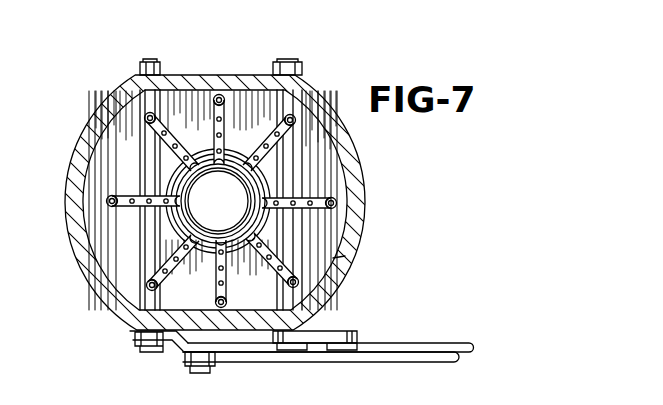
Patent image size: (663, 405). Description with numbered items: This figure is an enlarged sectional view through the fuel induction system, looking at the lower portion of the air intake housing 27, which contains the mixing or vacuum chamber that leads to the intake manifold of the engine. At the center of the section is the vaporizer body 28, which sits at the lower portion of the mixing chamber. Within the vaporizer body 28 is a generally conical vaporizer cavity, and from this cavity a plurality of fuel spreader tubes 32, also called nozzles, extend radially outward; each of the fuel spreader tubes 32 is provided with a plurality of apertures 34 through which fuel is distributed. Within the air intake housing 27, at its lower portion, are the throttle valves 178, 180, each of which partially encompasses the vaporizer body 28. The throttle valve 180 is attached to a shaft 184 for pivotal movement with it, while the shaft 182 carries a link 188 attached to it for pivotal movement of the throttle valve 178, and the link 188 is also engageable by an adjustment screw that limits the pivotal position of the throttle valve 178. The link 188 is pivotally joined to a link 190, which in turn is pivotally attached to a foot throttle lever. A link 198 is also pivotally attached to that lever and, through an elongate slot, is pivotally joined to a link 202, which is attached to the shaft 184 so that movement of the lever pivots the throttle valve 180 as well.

The air intake housing 27 is at (72, 200).
The vaporizer body 28 is at (218, 201).
The fuel spreader tubes 32 is at (270, 140).
The apertures 34 is at (213, 124).
The throttle valve 178 is at (122, 282).
The throttle valve 180 is at (333, 258).
The shaft 182 is at (126, 91).
The shaft 184 is at (304, 81).
The link 188 is at (178, 346).
The link 190 is at (397, 352).
The link 198 is at (440, 343).
The link 202 is at (346, 329).